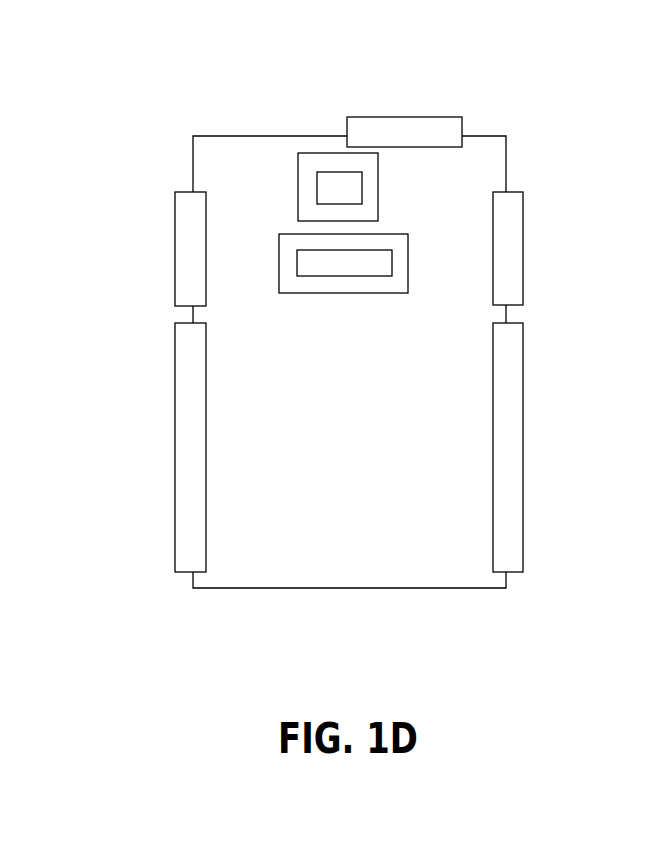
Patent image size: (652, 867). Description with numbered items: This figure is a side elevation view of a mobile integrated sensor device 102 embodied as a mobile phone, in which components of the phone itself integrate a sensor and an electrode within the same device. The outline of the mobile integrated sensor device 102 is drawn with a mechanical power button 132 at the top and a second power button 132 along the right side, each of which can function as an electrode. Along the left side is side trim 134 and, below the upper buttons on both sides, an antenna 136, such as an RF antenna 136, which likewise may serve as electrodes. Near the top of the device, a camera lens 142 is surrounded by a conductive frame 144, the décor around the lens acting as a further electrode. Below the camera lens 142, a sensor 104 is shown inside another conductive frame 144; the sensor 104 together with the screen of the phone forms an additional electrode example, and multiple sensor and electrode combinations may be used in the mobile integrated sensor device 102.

The mobile integrated sensor device 102 is at (208, 75).
The sensor 104 is at (378, 275).
The power button 132 is at (403, 127).
The side trim 134 is at (185, 250).
The antenna 136 is at (185, 448).
The camera lens 142 is at (323, 173).
The conductive frame 144 is at (298, 187).